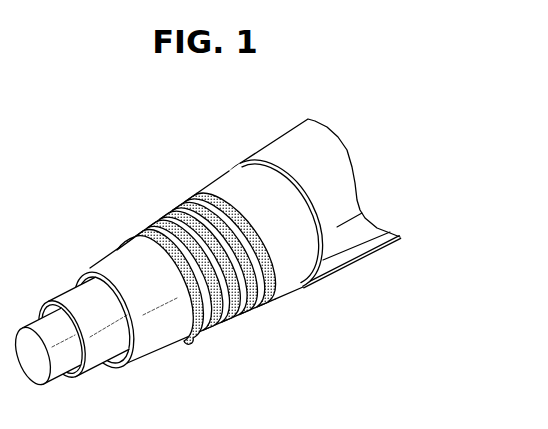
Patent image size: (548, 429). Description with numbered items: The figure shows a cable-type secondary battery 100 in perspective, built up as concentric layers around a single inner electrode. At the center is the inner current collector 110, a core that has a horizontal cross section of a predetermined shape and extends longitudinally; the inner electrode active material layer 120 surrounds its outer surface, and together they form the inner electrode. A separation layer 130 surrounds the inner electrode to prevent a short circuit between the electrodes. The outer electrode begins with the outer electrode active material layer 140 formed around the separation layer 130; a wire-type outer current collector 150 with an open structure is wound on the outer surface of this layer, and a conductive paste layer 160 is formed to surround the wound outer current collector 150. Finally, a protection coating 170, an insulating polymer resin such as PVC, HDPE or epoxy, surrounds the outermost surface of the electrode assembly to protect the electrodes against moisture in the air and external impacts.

The cable-type secondary battery 100 is at (107, 209).
The inner current collector 110 is at (61, 377).
The inner electrode active material layer 120 is at (101, 368).
The separation layer 130 is at (134, 366).
The outer electrode active material layer 140 is at (175, 341).
The wire-type outer current collector 150 is at (212, 323).
The conductive paste layer 160 is at (283, 281).
The protection coating 170 is at (334, 251).